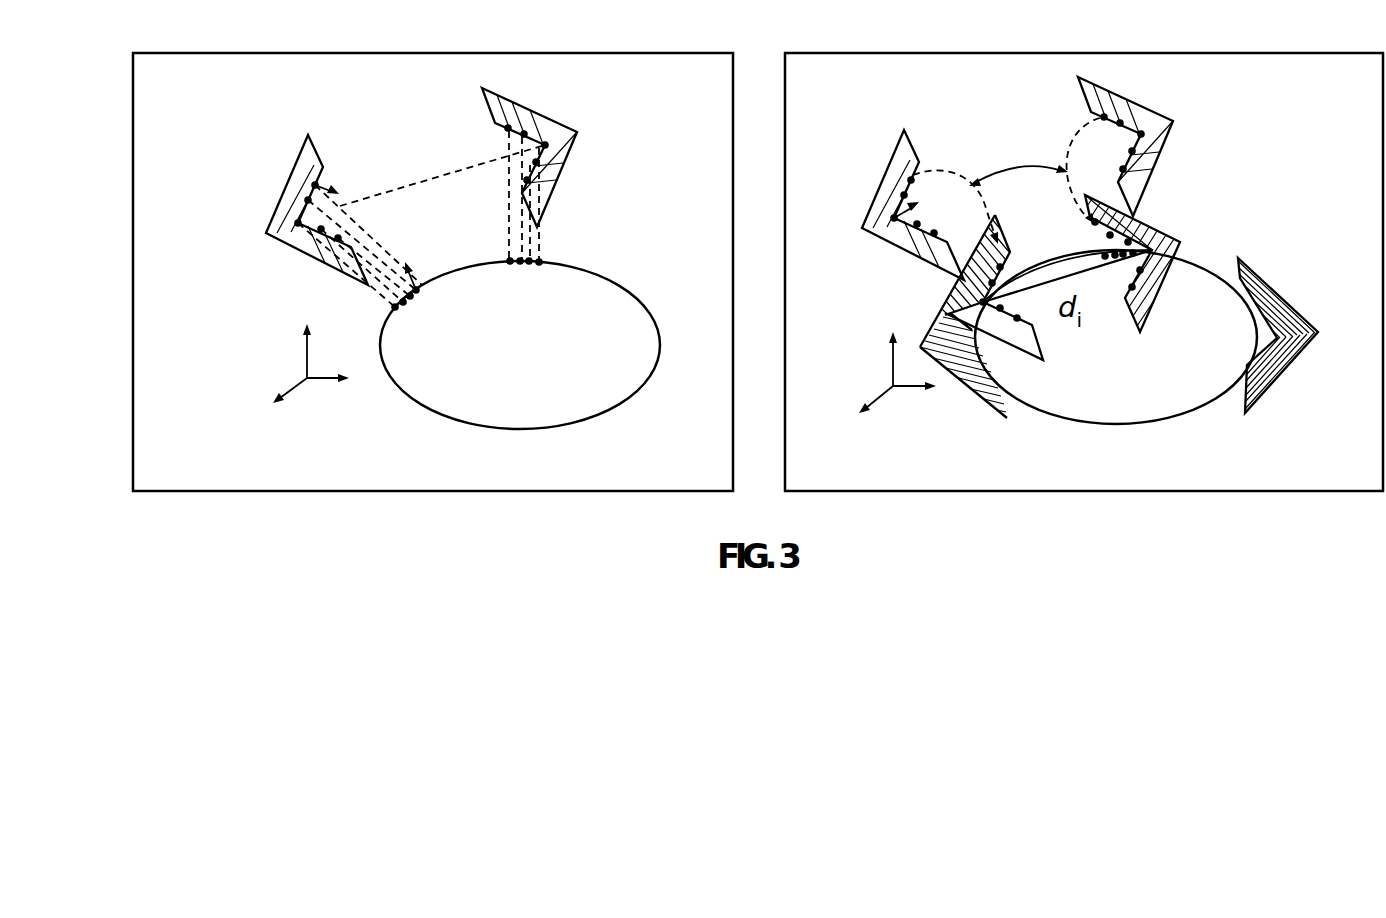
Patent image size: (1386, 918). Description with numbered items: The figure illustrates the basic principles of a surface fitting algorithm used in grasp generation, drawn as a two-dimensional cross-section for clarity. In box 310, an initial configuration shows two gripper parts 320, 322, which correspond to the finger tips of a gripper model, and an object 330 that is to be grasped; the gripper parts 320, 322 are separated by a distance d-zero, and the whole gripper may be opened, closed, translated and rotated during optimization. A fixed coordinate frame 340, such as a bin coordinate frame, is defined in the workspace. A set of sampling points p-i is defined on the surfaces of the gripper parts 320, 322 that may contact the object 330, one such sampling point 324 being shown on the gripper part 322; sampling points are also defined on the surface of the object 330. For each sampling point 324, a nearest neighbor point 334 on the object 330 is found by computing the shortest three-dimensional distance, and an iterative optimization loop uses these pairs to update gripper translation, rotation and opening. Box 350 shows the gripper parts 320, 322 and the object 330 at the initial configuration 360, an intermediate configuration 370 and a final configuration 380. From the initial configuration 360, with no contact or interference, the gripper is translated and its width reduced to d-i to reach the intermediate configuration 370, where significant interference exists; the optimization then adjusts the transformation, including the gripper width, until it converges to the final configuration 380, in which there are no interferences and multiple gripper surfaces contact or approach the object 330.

The box 310 is at (203, 53).
The gripper part 320 is at (287, 182).
The gripper part 322 is at (530, 107).
The sampling point 324 is at (505, 138).
The object 330 is at (510, 432).
The nearest neighbor point 334 is at (510, 263).
The fixed coordinate frame 340 is at (306, 395).
The box 350 is at (843, 53).
The initial configuration 360 is at (1208, 156).
The intermediate configuration 370 is at (1208, 238).
The final configuration 380 is at (1283, 399).